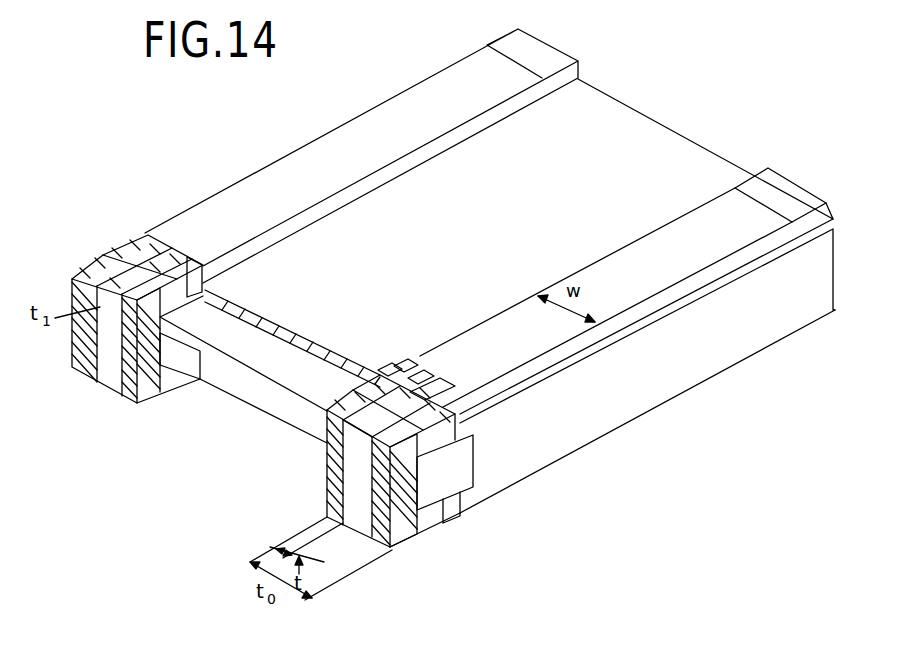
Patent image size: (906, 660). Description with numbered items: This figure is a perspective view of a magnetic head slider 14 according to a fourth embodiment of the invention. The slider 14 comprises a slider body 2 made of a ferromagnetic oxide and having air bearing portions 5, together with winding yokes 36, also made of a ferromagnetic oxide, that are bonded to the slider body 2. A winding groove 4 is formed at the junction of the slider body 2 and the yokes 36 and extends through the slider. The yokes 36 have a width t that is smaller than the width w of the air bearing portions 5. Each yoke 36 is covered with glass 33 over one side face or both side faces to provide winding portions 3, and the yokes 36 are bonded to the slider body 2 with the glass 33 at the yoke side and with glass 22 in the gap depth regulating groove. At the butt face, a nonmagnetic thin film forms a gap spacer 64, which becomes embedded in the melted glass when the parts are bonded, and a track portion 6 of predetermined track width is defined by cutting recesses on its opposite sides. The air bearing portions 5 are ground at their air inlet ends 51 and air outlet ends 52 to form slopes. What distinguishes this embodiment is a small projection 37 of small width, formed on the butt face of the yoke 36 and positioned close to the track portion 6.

The slider body 2 is at (583, 430).
The winding portions 3 is at (115, 407).
The winding groove 4 is at (462, 452).
The air bearing portions 5 is at (368, 122).
The track portion 6 is at (418, 380).
The magnetic head slider 14 is at (697, 390).
The glass 22 is at (437, 392).
The glass 33 is at (82, 366).
The winding yokes 36 is at (425, 526).
The small projection 37 is at (152, 236).
The air inlet ends 51 is at (790, 182).
The air outlet ends 52 is at (355, 432).
The gap spacer 64 is at (386, 372).